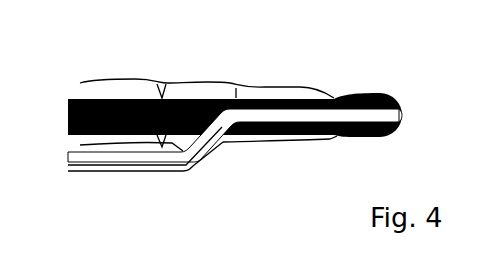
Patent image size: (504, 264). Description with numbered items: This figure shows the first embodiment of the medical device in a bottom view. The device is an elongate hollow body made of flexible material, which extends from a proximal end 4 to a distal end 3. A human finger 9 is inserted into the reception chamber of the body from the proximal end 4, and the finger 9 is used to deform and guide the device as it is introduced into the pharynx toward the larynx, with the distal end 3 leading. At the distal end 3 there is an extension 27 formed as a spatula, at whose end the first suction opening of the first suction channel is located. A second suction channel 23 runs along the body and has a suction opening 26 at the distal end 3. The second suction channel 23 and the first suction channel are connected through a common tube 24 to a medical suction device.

The distal end 3 is at (410, 138).
The proximal end 4 is at (54, 91).
The human finger 9 is at (195, 92).
The second suction channel 23 is at (213, 127).
The common tube 24 is at (113, 157).
The suction opening 26 is at (402, 117).
The extension 27 is at (372, 93).